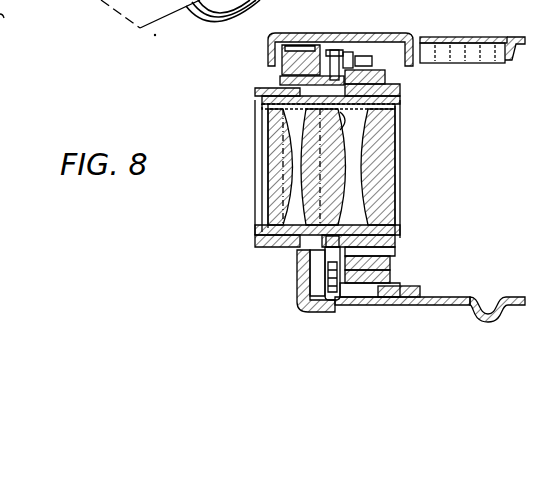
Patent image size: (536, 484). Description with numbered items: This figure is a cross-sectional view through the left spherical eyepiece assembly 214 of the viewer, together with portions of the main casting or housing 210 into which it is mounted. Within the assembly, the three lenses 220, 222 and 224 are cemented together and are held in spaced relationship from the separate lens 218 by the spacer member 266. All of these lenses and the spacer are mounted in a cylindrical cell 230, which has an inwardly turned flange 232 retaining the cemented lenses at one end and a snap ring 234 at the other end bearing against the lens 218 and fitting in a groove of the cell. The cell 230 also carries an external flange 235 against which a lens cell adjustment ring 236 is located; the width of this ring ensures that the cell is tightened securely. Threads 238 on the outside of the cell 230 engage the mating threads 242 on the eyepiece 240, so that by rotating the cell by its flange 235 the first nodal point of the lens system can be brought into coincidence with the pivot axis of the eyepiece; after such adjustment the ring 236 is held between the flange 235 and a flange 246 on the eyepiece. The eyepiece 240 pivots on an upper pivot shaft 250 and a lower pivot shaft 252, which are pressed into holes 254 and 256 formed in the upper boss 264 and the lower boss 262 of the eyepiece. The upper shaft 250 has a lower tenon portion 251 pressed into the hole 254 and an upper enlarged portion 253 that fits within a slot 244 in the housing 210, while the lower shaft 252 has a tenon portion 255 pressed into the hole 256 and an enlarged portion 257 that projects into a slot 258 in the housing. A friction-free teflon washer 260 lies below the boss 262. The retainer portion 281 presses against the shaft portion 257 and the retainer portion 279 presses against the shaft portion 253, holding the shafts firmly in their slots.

The main casting 210 is at (266, 74).
The left spherical eyepiece assembly 214 is at (232, 205).
The lens 218 is at (277, 156).
The lens 220 is at (401, 180).
The lens 222 is at (399, 138).
The lens 224 is at (399, 160).
The cylindrical cell 230 is at (398, 113).
The inwardly turned flange 232 is at (400, 216).
The snap ring 234 is at (262, 231).
The external flange 235 is at (268, 240).
The lens cell adjustment ring 236 is at (280, 247).
The threads 238 is at (400, 96).
The eyepiece 240 is at (400, 240).
The mating threads 242 is at (399, 199).
The slot 244 is at (335, 57).
The flange 246 is at (294, 252).
The upper pivot shaft 250 is at (358, 21).
The lower tenon portion 251 is at (385, 80).
The lower pivot shaft 252 is at (340, 306).
The upper enlarged portion 253 is at (362, 60).
The hole 254 is at (262, 100).
The tenon portion 255 is at (385, 257).
The hole 256 is at (297, 268).
The enlarged portion 257 is at (382, 311).
The slot 258 is at (333, 302).
The teflon washer 260 is at (342, 268).
The boss 262 is at (300, 293).
The boss 264 is at (266, 86).
The spacer member 266 is at (268, 134).
The retainer portion 279 is at (340, 62).
The retainer portion 281 is at (388, 278).